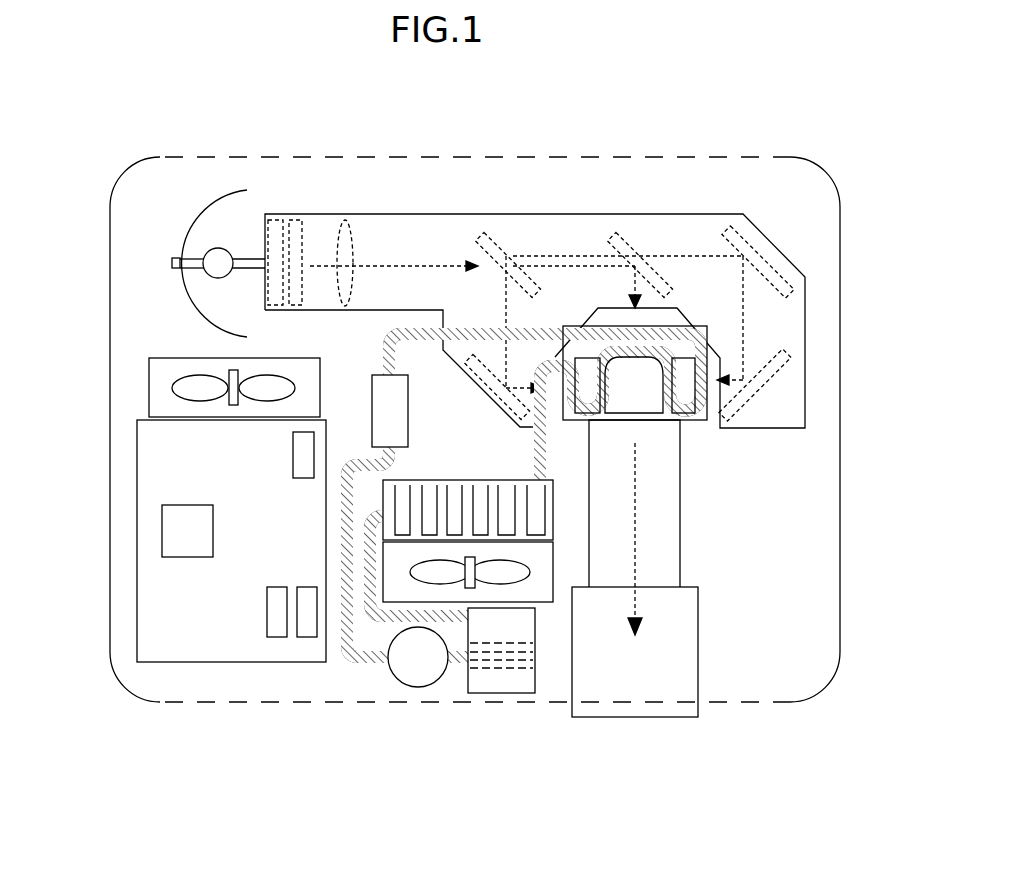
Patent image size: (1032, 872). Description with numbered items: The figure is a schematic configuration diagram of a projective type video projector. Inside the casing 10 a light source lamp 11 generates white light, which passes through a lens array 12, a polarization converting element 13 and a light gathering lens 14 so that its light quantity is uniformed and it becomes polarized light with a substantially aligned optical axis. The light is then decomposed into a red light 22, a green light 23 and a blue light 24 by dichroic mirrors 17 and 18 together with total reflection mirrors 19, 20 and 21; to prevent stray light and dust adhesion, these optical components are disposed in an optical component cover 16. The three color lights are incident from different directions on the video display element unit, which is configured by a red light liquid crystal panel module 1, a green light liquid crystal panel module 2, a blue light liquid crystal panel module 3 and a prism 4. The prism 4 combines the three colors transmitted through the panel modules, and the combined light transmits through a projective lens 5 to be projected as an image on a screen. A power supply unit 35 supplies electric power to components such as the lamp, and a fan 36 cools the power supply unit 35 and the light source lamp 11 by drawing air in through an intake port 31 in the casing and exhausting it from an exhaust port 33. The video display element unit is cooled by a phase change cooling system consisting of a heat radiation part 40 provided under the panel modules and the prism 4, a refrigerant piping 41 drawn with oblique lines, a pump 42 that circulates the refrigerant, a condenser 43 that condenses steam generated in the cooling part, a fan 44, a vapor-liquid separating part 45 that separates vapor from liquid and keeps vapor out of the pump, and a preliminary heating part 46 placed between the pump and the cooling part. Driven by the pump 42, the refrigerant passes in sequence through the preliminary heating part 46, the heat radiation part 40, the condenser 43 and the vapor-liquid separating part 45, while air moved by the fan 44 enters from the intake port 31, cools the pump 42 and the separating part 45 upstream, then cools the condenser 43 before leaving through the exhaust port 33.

The red light liquid crystal panel module 1 is at (580, 420).
The green light liquid crystal panel module 2 is at (664, 348).
The blue light liquid crystal panel module 3 is at (687, 420).
The prism 4 is at (633, 418).
The projective lens 5 is at (700, 652).
The casing 10 is at (110, 333).
The light source lamp 11 is at (224, 250).
The lens array 12 is at (275, 220).
The polarization converting element 13 is at (296, 220).
The light gathering lens 14 is at (345, 220).
The optical component cover 16 is at (688, 214).
The dichroic mirror 17 is at (495, 235).
The dichroic mirror 18 is at (626, 235).
The total reflection mirror 19 is at (745, 230).
The total reflection mirror 20 is at (780, 370).
The total reflection mirror 21 is at (488, 395).
The red light 22 is at (505, 355).
The green light 23 is at (600, 235).
The blue light 24 is at (744, 327).
The intake port 31 is at (230, 702).
The exhaust port 33 is at (182, 157).
The power supply unit 35 is at (137, 505).
The fan 36 is at (149, 385).
The heat radiation part 40 is at (570, 326).
The refrigerant piping 41 is at (362, 664).
The pump 42 is at (418, 688).
The condenser 43 is at (468, 480).
The fan 44 is at (553, 570).
The vapor-liquid separating part 45 is at (500, 694).
The preliminary heating part 46 is at (378, 376).